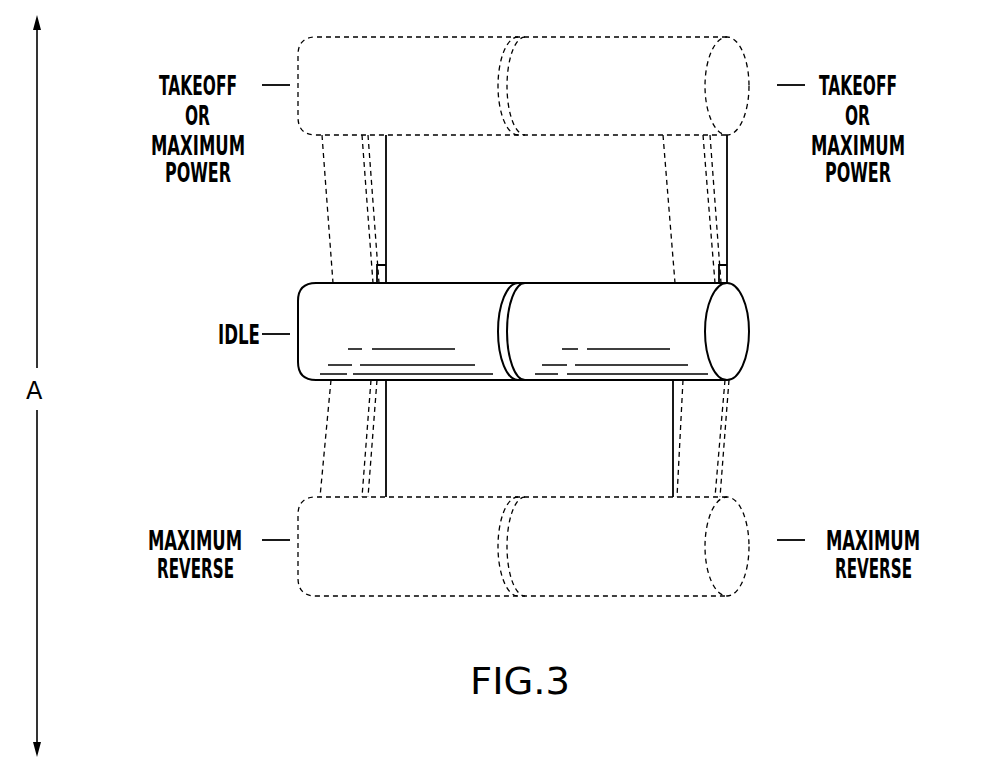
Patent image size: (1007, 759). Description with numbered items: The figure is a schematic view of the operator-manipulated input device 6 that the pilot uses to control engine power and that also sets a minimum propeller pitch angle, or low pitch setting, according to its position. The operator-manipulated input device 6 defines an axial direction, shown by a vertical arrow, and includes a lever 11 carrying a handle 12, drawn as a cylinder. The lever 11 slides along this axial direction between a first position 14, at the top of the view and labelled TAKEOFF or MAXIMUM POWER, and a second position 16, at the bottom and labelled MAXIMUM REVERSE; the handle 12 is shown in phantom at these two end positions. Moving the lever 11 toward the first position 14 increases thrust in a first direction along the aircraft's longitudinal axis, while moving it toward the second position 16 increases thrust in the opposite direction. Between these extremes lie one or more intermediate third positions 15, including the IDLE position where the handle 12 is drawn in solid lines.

The operator-manipulated input device 6 is at (163, 682).
The lever 11 is at (690, 190).
The handle 12 is at (585, 303).
The first position 14 is at (274, 75).
The intermediate third positions 15 is at (274, 346).
The second position 16 is at (273, 550).